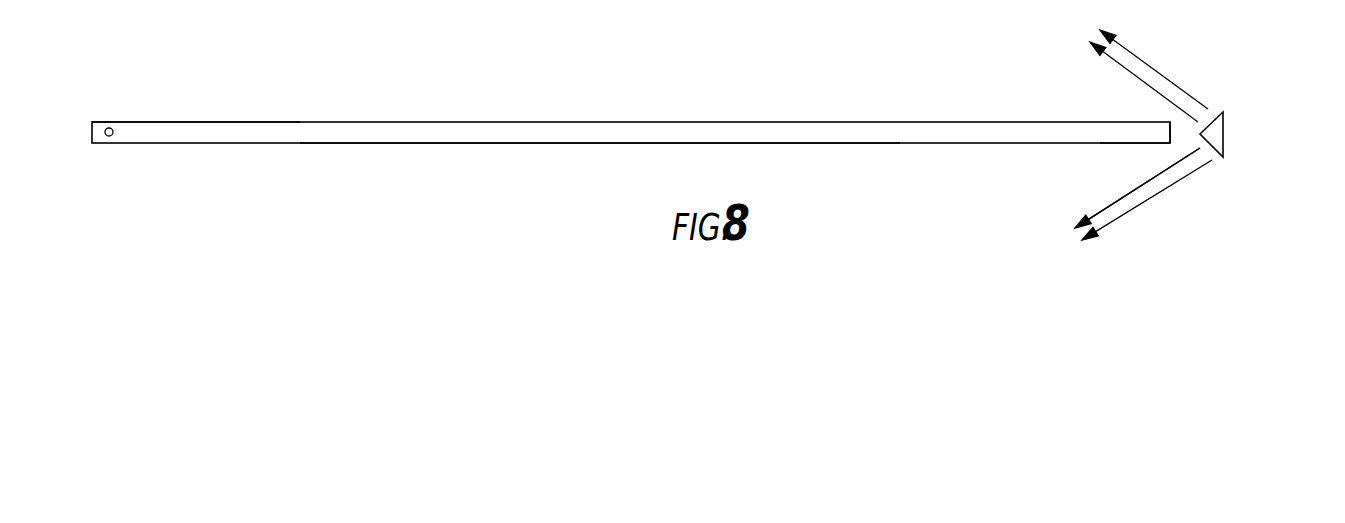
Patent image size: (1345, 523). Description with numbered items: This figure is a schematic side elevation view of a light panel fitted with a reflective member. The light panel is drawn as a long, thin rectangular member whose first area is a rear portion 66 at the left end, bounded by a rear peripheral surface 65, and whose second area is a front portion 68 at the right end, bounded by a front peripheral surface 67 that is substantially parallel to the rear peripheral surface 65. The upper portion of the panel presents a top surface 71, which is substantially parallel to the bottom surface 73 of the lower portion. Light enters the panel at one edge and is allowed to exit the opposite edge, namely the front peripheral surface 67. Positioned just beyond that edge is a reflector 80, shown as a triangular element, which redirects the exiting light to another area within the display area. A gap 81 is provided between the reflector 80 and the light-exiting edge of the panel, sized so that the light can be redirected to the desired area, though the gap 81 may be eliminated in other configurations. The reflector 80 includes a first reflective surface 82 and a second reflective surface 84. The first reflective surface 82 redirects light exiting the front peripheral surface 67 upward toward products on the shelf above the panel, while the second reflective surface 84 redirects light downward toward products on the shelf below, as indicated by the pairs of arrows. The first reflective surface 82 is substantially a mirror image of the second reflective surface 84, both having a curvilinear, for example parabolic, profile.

The rear peripheral surface 65 is at (92, 137).
The rear portion 66 is at (148, 122).
The front peripheral surface 67 is at (1173, 132).
The front portion 68 is at (1143, 143).
The top surface 71 is at (648, 122).
The bottom surface 73 is at (548, 143).
The reflector 80 is at (1225, 132).
The gap 81 is at (1182, 147).
The first reflective surface 82 is at (1212, 120).
The second reflective surface 84 is at (1212, 148).